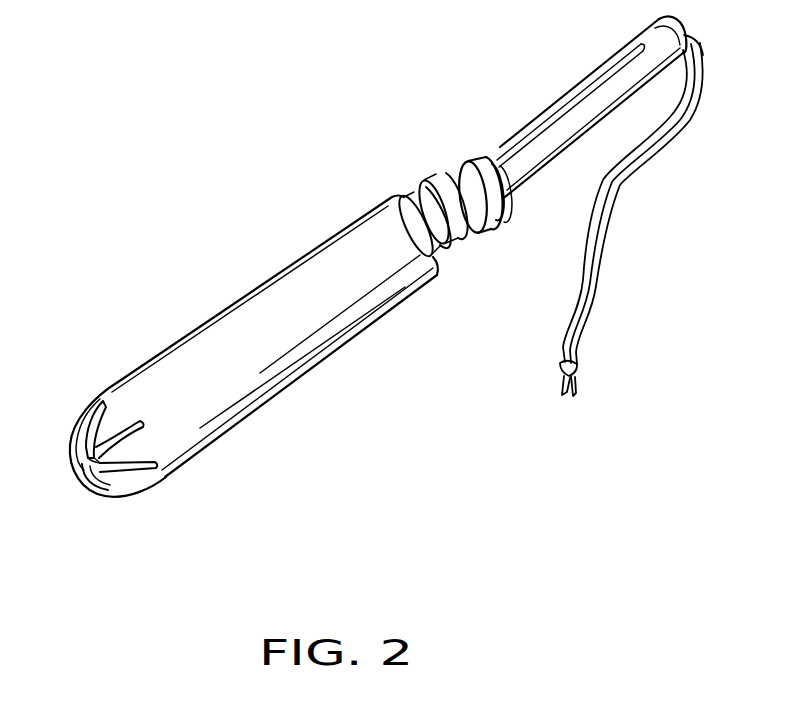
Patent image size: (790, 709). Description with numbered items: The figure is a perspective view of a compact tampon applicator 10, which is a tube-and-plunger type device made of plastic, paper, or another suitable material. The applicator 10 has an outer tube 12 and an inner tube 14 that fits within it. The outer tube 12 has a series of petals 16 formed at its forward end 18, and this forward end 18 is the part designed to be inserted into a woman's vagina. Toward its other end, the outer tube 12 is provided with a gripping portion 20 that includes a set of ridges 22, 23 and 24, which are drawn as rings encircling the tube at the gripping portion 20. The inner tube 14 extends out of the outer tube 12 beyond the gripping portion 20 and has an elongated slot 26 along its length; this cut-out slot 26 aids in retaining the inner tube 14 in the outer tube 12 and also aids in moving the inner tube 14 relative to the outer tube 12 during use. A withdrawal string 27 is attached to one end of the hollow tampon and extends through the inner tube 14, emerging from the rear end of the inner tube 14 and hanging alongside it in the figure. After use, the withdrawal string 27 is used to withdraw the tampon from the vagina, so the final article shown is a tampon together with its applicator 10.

The compact tampon applicator 10 is at (374, 287).
The outer tube 12 is at (327, 343).
The inner tube 14 is at (584, 117).
The petals 16 is at (123, 453).
The forward end 18 is at (72, 475).
The gripping portion 20 is at (458, 170).
The ridge 22 is at (448, 257).
The ridge 23 is at (470, 240).
The ridge 24 is at (492, 224).
The elongated slot 26 is at (527, 127).
The withdrawal string 27 is at (670, 140).